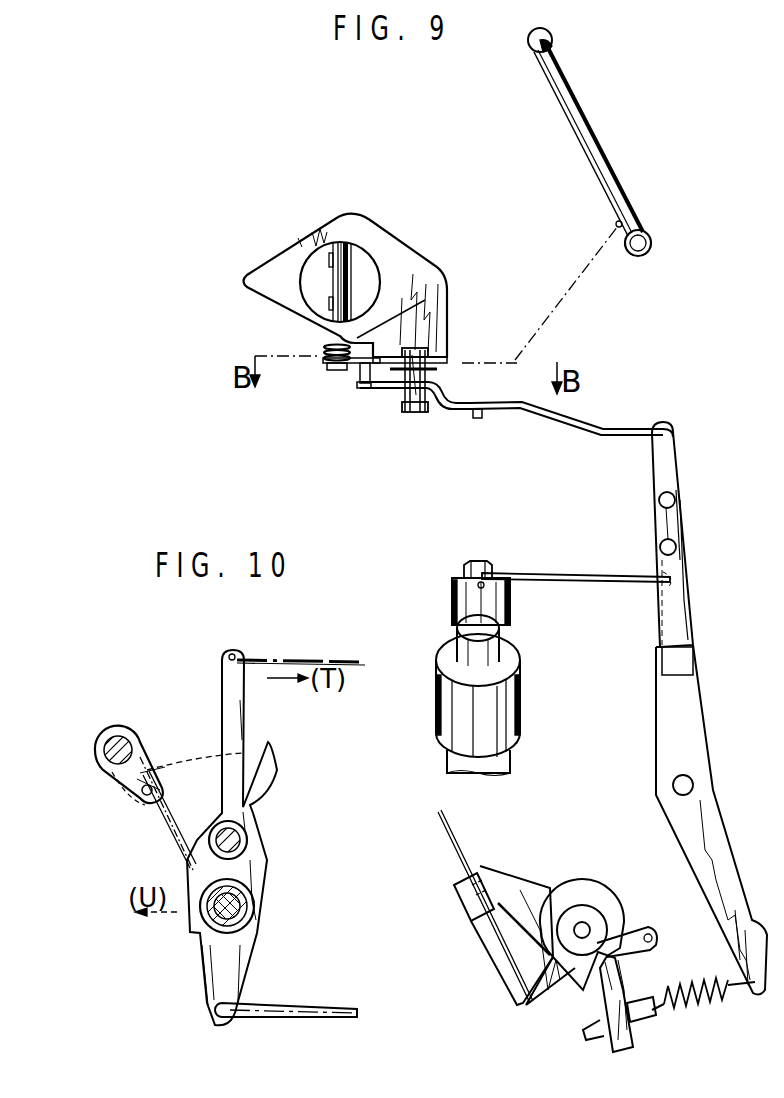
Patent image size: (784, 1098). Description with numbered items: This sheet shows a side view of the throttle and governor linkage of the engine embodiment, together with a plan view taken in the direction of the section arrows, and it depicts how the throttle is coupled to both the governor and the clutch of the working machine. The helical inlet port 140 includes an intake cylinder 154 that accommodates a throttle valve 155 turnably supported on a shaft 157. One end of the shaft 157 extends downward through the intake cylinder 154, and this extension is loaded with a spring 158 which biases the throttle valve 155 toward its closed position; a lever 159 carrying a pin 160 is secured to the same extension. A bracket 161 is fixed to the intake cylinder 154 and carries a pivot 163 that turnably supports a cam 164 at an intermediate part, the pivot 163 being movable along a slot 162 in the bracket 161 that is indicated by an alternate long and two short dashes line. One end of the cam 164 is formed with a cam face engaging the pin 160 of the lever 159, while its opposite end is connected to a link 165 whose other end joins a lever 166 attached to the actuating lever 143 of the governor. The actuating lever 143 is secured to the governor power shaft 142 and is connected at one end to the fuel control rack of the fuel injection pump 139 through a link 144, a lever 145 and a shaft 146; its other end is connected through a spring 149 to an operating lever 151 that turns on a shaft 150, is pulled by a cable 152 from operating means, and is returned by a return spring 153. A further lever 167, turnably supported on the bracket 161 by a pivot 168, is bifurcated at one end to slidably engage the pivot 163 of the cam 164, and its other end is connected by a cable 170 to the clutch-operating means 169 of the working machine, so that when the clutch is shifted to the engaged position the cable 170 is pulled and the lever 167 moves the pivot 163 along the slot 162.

In FIG. 9, the fuel injection pump 139 is at (510, 714).
In FIG. 9, the helical inlet port 140 is at (363, 267).
In FIG. 9, the power shaft 142 is at (693, 785).
In FIG. 9, the actuating lever 143 is at (692, 690).
In FIG. 9, the link 144 is at (567, 573).
In FIG. 9, the lever 145 is at (456, 578).
In FIG. 9, the shaft 146 is at (478, 562).
In FIG. 9, the spring 149 is at (708, 1005).
In FIG. 9, the shaft 150 is at (582, 930).
In FIG. 9, the operating lever 151 is at (600, 1000).
In FIG. 9, the cable 152 is at (492, 928).
In FIG. 9, the return spring 153 is at (620, 937).
In FIG. 9, the intake cylinder 154 is at (300, 243).
In FIG. 9, the throttle valve 155 is at (328, 280).
In FIG. 9, the shaft 157 is at (347, 242).
In FIG. 10, the shaft 157 is at (120, 745).
In FIG. 9, the spring 158 is at (328, 346).
In FIG. 9, the lever 159 is at (338, 371).
In FIG. 10, the lever 159 is at (152, 777).
In FIG. 9, the pin 160 is at (365, 389).
In FIG. 10, the pin 160 is at (138, 800).
In FIG. 9, the bracket 161 is at (447, 318).
In FIG. 10, the slot 162 is at (200, 932).
In FIG. 9, the pivot 163 is at (414, 413).
In FIG. 10, the pivot 163 is at (202, 973).
In FIG. 9, the cam 164 is at (470, 420).
In FIG. 10, the cam 164 is at (182, 845).
In FIG. 9, the link 165 is at (583, 417).
In FIG. 10, the link 165 is at (310, 1020).
In FIG. 9, the lever 166 is at (677, 454).
In FIG. 9, the lever 167 is at (395, 388).
In FIG. 10, the lever 167 is at (242, 720).
In FIG. 10, the pivot 168 is at (247, 838).
In FIG. 9, the clutch-operating means 169 is at (603, 153).
In FIG. 9, the cable 170 is at (553, 322).
In FIG. 10, the cable 170 is at (308, 660).